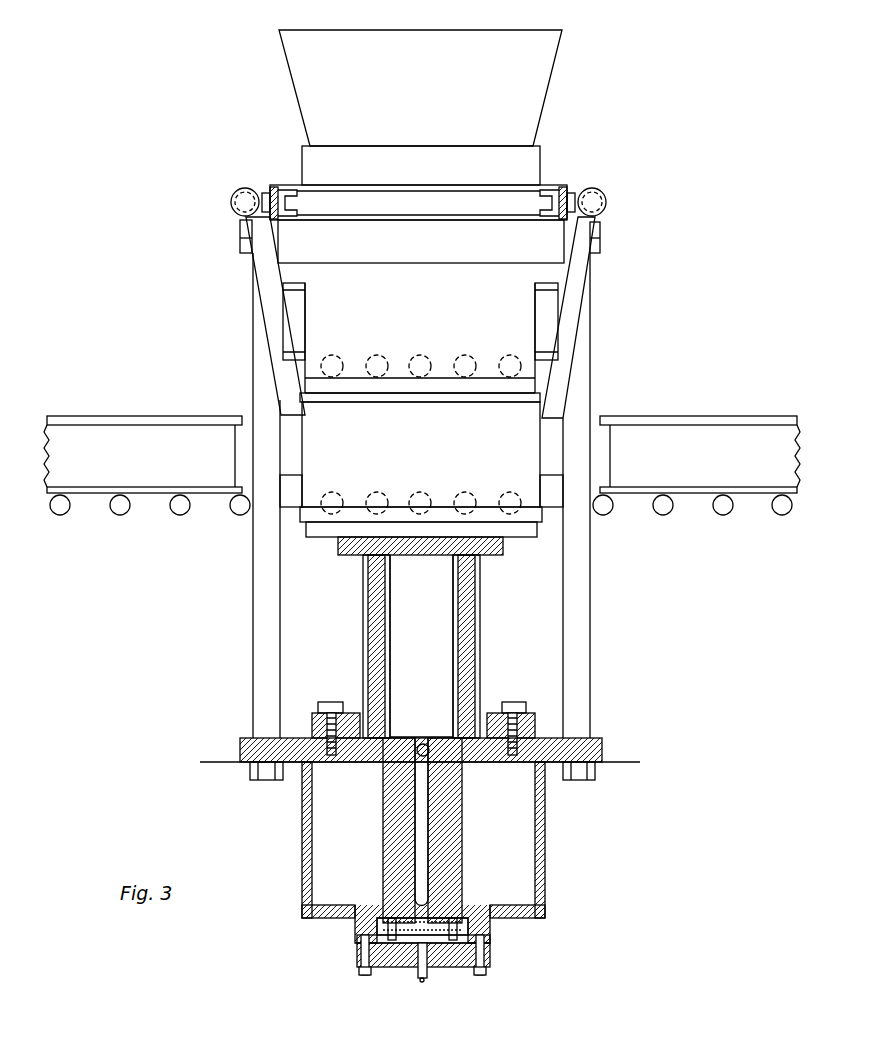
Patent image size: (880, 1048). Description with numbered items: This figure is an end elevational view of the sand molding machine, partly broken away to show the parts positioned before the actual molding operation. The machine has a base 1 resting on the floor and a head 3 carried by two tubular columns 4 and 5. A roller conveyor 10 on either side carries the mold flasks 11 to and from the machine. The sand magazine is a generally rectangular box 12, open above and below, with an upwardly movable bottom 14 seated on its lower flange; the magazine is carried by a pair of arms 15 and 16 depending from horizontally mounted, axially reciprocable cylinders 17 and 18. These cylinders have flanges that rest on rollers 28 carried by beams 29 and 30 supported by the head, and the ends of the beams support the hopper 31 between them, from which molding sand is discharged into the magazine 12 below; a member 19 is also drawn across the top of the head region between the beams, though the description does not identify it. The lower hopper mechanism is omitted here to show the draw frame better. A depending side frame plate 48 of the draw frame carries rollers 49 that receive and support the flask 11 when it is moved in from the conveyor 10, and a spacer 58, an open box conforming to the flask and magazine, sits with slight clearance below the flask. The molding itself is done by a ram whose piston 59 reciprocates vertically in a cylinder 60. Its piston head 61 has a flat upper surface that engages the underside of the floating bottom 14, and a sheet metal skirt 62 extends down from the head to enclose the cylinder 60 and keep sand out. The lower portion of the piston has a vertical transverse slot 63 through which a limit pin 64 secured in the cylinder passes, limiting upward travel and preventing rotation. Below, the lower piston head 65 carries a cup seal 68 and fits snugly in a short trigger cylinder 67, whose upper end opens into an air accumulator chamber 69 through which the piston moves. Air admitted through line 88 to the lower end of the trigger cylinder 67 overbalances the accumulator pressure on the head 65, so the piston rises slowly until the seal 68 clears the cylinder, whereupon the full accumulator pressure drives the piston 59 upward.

The base 1 is at (605, 748).
The head 3 is at (600, 237).
The tubular column 4 is at (260, 603).
The tubular column 5 is at (582, 622).
The roller conveyor 10 is at (68, 514).
The mold flask 11 is at (298, 302).
The sand magazine box 12 is at (520, 437).
The upwardly movable bottom 14 is at (513, 530).
The arm 15 is at (277, 322).
The arm 16 is at (563, 318).
The axially reciprocable cylinder 17 is at (231, 201).
The axially reciprocable cylinder 18 is at (606, 197).
The cross bar 19 is at (400, 197).
The roller 28 is at (266, 192).
The beam 29 is at (287, 185).
The beam 30 is at (553, 193).
The hopper 31 is at (528, 102).
The side frame plate 48 is at (420, 338).
The roller 49 is at (415, 357).
The spacer 58 is at (317, 387).
The piston 59 is at (463, 808).
The cylinder 60 is at (465, 665).
The piston head 61 is at (340, 540).
The sheet metal skirt 62 is at (365, 600).
The transverse slot 63 is at (428, 840).
The limit pin 64 is at (423, 744).
The lower piston head 65 is at (437, 945).
The trigger cylinder 67 is at (492, 933).
The cup seal 68 is at (380, 910).
The air accumulator chamber 69 is at (545, 842).
The air line 88 is at (418, 975).